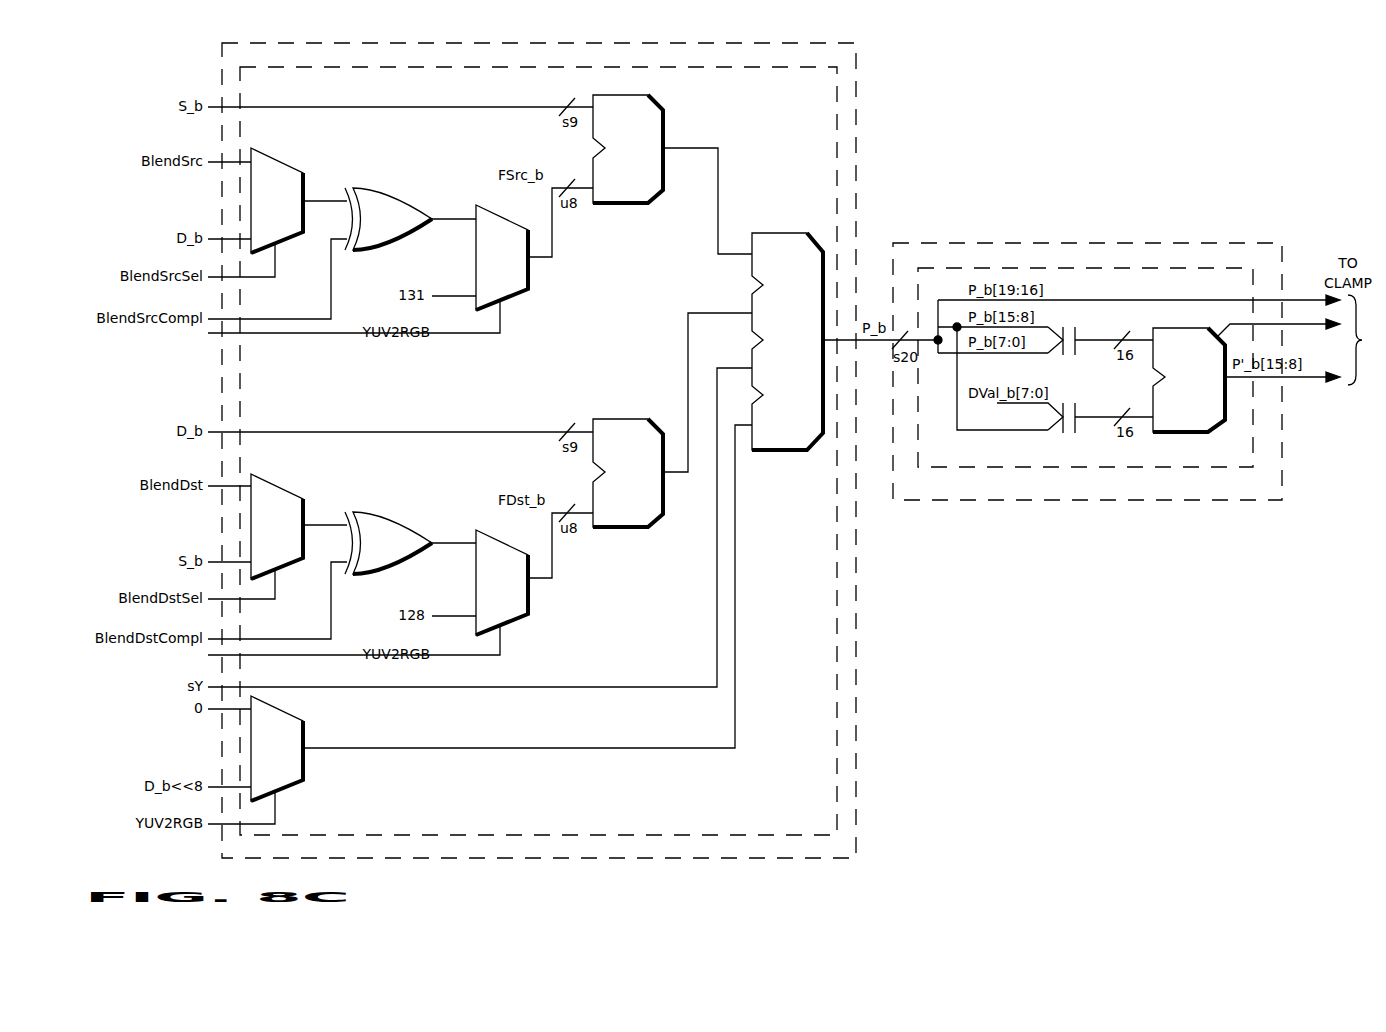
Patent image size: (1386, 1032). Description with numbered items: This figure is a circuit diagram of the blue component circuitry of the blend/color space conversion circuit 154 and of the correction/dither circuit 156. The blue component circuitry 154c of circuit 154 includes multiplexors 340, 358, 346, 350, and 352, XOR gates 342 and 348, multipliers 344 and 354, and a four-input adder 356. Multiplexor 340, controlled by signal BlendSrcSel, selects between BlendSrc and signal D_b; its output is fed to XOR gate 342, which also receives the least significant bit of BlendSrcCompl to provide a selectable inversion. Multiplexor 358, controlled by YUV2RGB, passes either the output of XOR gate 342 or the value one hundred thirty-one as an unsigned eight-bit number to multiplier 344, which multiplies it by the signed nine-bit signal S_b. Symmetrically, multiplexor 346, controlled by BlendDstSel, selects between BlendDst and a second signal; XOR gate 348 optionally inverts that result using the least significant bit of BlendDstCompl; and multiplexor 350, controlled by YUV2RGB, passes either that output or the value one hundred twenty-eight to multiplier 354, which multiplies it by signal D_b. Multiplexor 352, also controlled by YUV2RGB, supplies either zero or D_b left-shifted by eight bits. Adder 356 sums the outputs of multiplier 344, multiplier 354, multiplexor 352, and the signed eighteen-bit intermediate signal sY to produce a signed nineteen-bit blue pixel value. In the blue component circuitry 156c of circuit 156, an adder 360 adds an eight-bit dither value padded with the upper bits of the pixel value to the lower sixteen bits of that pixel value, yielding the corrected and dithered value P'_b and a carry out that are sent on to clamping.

The blend/color space conversion circuit 154 is at (542, 450).
The blue component circuitry 154c is at (538, 451).
The correction/dither circuit 156 is at (1087, 371).
The blue component circuitry of correction/dither circuit 156c is at (1085, 367).
The multiplexor 340 is at (277, 200).
The XOR gate 342 is at (388, 219).
The multiplier 344 is at (628, 149).
The multiplexor 346 is at (277, 526).
The XOR gate 348 is at (388, 543).
The multiplexor 350 is at (502, 582).
The multiplexor 352 is at (277, 748).
The multiplier 354 is at (628, 473).
The adder 356 is at (787, 341).
The multiplexor 358 is at (502, 257).
The output adder 360 is at (1189, 380).